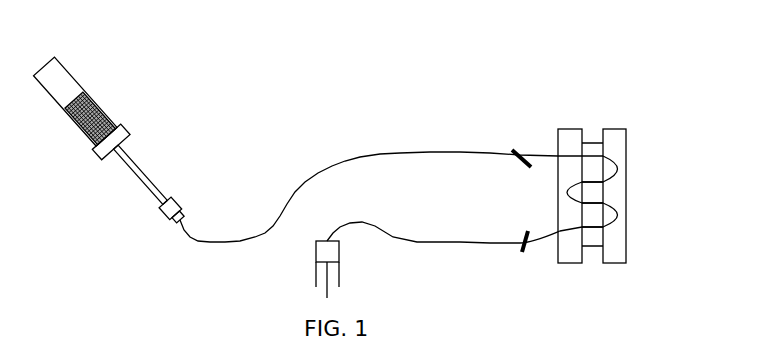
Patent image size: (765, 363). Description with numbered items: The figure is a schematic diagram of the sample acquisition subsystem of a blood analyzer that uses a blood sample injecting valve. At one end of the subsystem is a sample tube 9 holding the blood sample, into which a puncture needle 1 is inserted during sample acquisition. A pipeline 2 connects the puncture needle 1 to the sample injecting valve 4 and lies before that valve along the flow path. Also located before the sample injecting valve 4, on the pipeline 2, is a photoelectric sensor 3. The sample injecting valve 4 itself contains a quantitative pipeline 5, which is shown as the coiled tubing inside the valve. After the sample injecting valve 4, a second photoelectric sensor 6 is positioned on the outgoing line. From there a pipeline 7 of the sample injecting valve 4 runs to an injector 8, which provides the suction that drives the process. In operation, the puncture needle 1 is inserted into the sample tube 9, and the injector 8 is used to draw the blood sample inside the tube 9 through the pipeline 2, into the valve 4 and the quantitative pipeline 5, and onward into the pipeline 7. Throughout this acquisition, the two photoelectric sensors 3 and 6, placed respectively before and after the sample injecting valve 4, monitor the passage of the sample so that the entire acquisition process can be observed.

The puncture needle 1 is at (137, 156).
The pipeline 2 is at (322, 172).
The photoelectric sensor 3 is at (512, 150).
The sample injecting valve 4 is at (570, 128).
The quantitative pipeline 5 is at (583, 160).
The photoelectric sensor 6 is at (526, 231).
The pipeline 7 is at (423, 240).
The injector 8 is at (315, 254).
The sample tube 9 is at (102, 112).